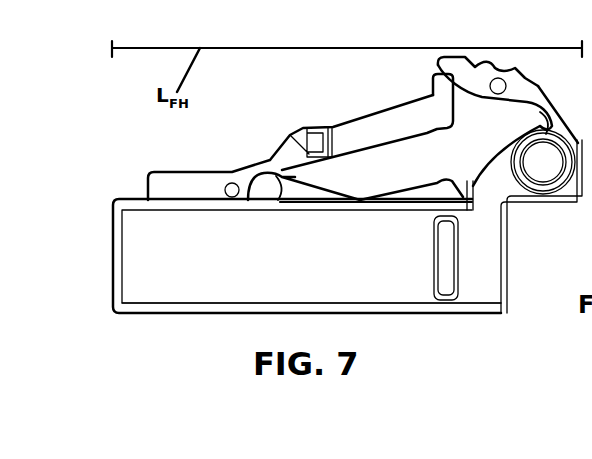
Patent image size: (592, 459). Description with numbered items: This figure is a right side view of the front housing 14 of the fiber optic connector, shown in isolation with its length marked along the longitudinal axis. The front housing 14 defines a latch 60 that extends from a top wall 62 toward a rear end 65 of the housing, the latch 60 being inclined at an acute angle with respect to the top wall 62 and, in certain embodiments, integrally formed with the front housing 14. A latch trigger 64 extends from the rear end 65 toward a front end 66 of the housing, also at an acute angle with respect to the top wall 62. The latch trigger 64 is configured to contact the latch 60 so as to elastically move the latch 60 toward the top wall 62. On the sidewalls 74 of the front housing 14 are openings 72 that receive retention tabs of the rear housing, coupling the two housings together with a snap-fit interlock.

The front housing 14 is at (344, 266).
The latch 60 is at (377, 112).
The top wall 62 is at (362, 202).
The latch trigger 64 is at (549, 97).
The rear end 65 is at (530, 255).
The front end 66 is at (103, 232).
The openings 72 is at (442, 283).
The sidewalls 74 is at (182, 283).